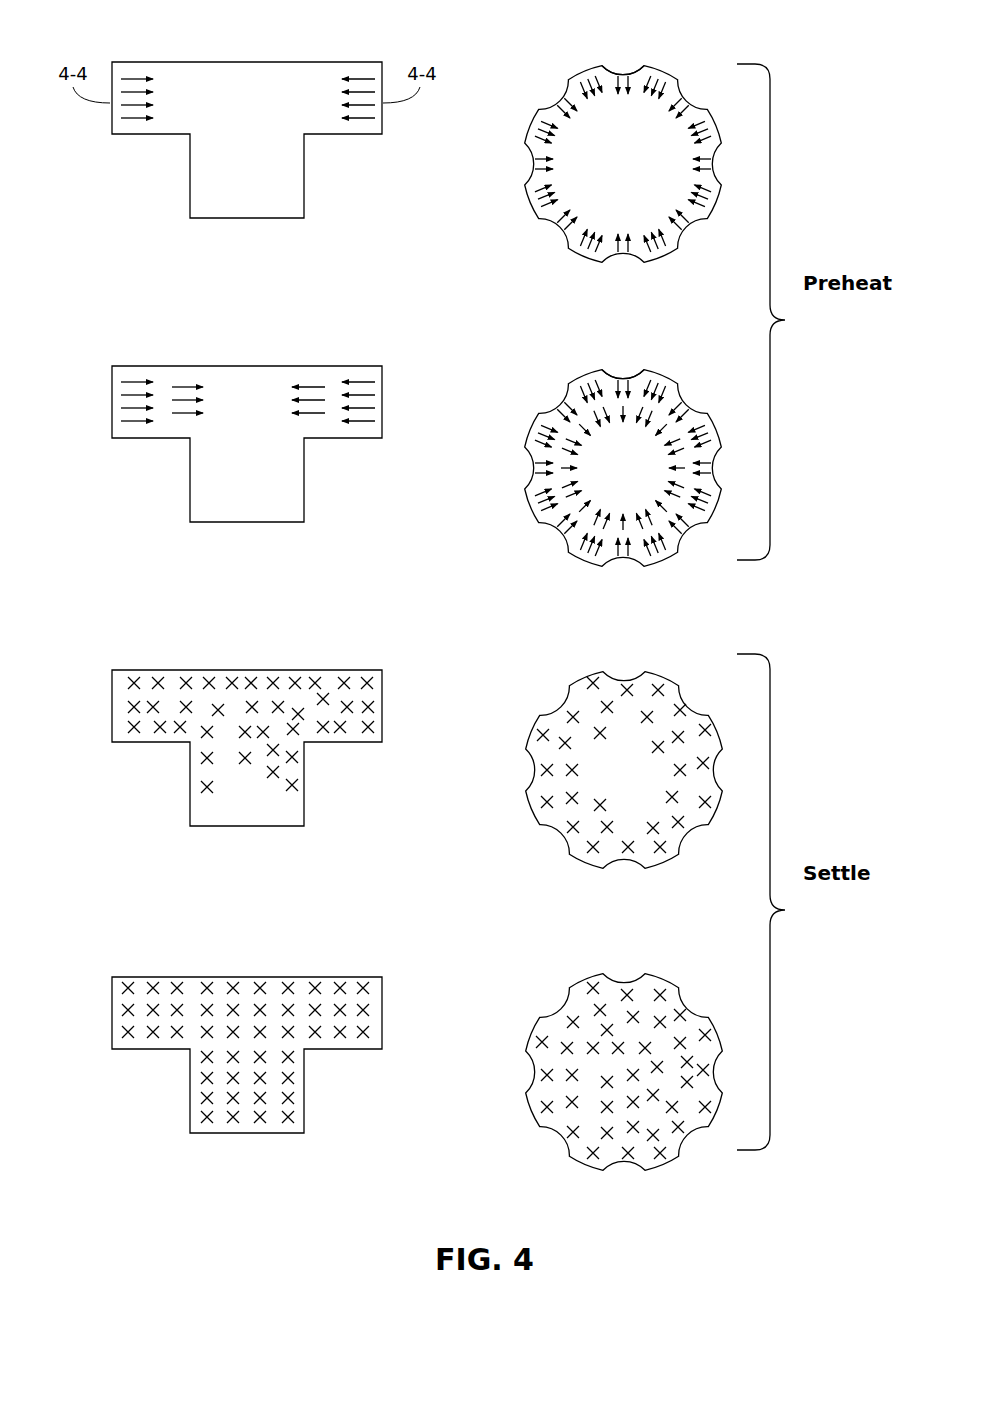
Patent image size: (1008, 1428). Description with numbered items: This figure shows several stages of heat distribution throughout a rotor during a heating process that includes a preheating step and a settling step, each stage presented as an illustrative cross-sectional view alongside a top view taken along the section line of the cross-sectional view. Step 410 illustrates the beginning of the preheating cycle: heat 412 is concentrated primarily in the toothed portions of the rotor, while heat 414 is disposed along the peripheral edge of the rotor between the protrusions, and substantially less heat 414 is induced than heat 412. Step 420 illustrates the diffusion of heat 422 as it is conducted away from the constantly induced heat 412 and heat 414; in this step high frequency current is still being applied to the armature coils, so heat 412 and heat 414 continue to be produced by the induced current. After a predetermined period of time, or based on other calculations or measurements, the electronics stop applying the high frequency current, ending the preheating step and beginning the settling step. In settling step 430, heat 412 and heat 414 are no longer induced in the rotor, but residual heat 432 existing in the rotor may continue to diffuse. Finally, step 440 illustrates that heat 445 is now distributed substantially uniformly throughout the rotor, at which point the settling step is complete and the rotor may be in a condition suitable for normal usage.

The step 410 is at (416, 162).
The heat 412 is at (160, 93).
The heat 414 is at (620, 71).
The step 420 is at (416, 466).
The heat 422 is at (210, 400).
The settling step 430 is at (417, 769).
The residual heat 432 is at (172, 692).
The step 440 is at (417, 1072).
The heat 445 is at (188, 993).